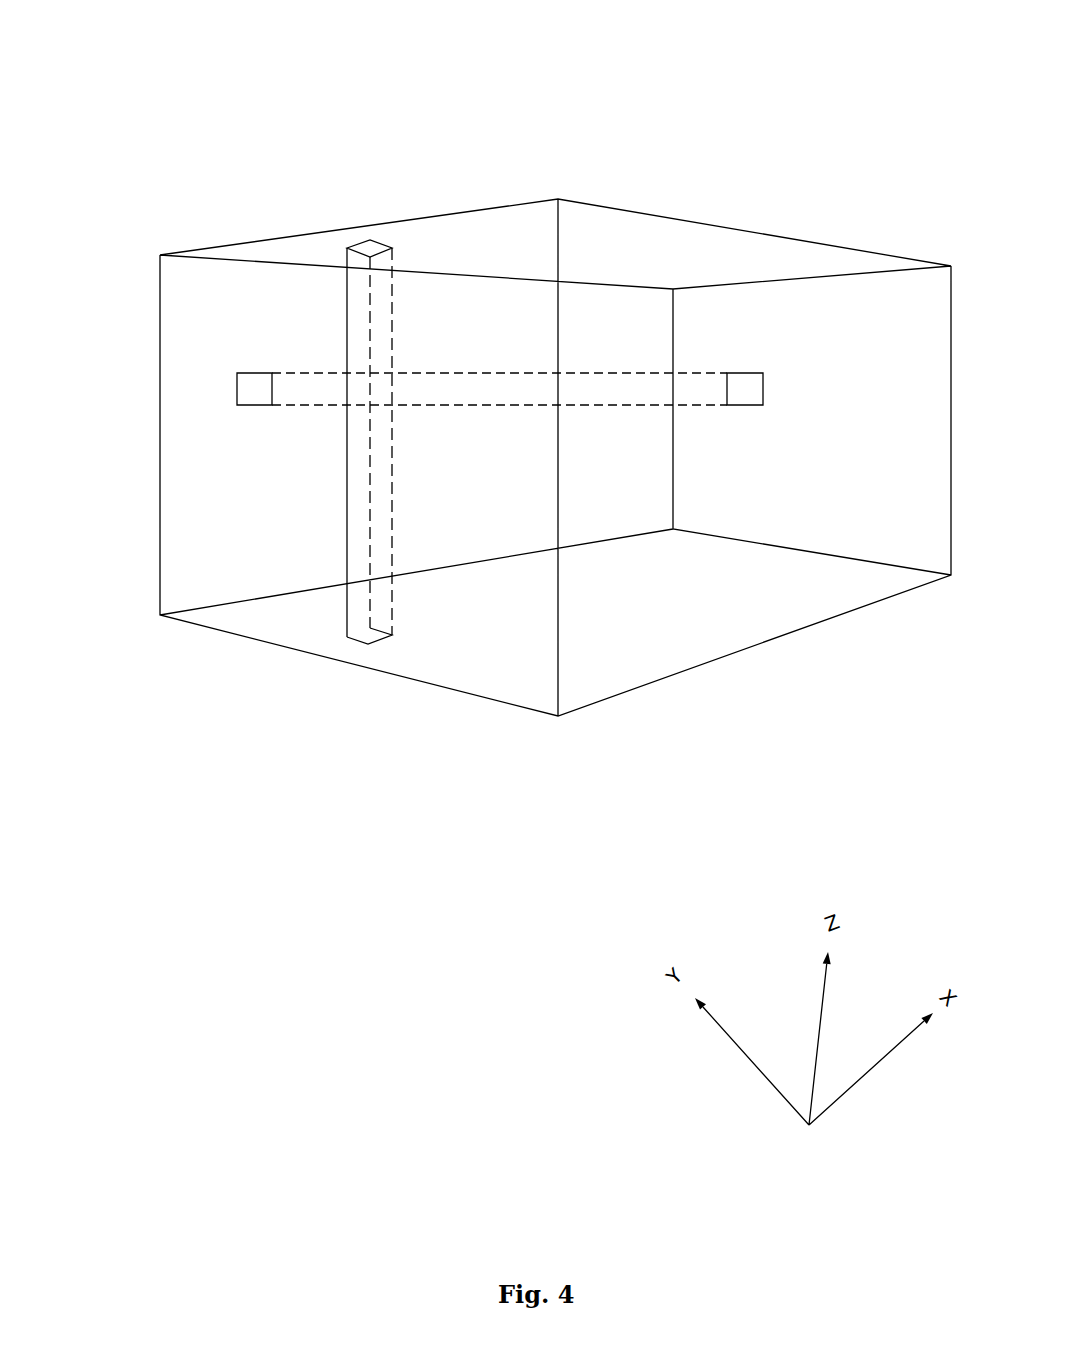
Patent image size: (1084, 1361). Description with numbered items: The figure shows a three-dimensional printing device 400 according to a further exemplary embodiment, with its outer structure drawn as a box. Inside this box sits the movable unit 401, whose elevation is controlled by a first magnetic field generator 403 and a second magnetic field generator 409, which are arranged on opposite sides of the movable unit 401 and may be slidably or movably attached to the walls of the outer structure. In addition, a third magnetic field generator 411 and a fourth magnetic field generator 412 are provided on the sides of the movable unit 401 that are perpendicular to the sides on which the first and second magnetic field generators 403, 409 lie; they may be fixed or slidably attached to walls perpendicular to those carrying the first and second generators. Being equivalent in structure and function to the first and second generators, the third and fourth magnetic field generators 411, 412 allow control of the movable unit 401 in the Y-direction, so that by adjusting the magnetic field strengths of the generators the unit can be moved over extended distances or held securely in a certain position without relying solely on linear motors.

The 3D printing device 400 is at (505, 91).
The movable unit 401 is at (368, 407).
The first magnetic field generator 403 is at (354, 660).
The second magnetic field generator 409 is at (358, 228).
The third magnetic field generator 411 is at (738, 417).
The fourth magnetic field generator 412 is at (222, 392).